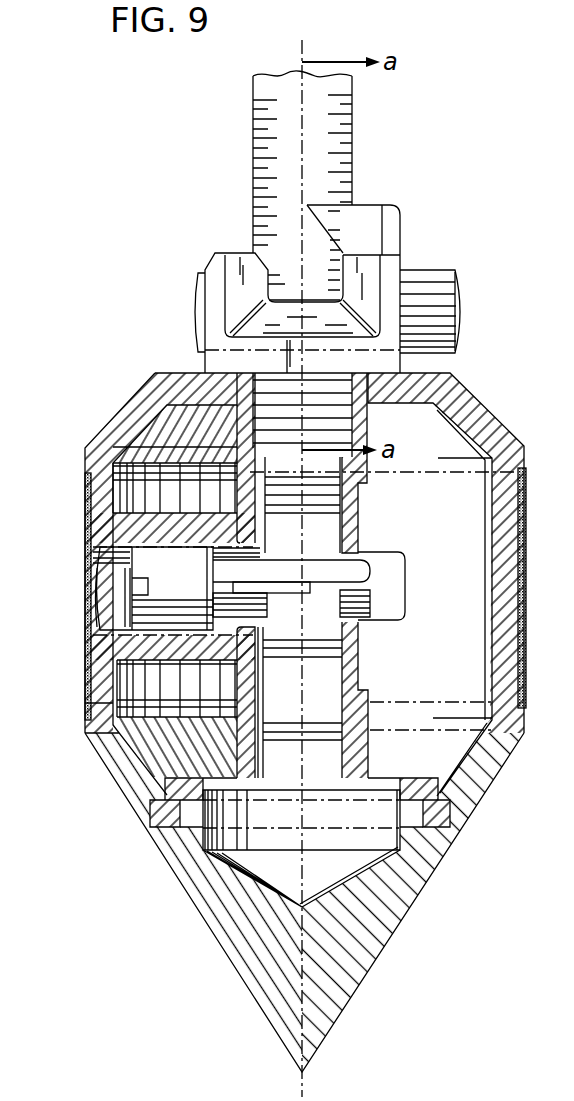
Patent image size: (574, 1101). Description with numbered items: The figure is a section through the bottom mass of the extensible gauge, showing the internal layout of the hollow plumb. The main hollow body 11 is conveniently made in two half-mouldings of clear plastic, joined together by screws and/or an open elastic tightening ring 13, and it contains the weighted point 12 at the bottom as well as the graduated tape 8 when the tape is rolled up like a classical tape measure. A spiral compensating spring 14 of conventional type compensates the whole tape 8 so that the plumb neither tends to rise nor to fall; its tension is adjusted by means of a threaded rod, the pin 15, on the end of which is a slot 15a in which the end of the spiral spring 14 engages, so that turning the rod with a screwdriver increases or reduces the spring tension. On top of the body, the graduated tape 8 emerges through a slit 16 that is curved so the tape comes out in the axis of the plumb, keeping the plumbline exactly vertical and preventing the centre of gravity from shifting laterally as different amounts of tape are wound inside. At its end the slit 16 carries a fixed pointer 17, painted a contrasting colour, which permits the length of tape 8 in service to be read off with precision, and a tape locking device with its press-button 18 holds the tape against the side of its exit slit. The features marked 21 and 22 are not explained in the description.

The graduated tape 8 is at (322, 103).
The main hollow body 11 is at (457, 690).
The weighted point 12 is at (393, 888).
The elastic tightening ring 13 is at (528, 598).
The spiral compensating spring 14 is at (358, 658).
The pin for adjusting the tension of the compensating spring 15 is at (182, 578).
The slot 15a is at (362, 586).
The slit 16 is at (282, 325).
The fixed pointer 17 is at (330, 216).
The press-button 18 is at (442, 283).
The rod neck 21 is at (316, 215).
The slot 22 is at (305, 287).